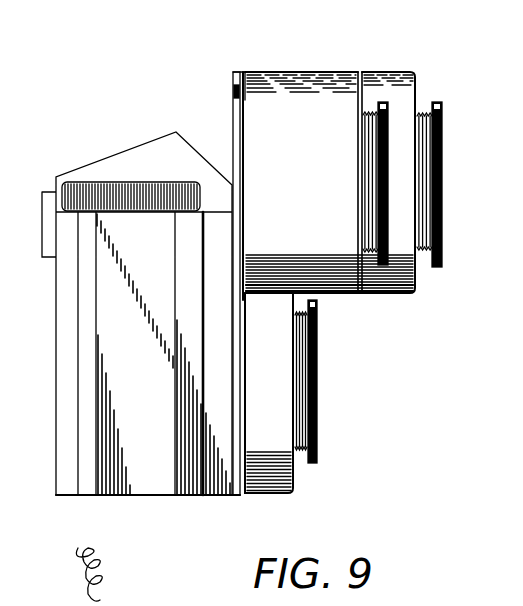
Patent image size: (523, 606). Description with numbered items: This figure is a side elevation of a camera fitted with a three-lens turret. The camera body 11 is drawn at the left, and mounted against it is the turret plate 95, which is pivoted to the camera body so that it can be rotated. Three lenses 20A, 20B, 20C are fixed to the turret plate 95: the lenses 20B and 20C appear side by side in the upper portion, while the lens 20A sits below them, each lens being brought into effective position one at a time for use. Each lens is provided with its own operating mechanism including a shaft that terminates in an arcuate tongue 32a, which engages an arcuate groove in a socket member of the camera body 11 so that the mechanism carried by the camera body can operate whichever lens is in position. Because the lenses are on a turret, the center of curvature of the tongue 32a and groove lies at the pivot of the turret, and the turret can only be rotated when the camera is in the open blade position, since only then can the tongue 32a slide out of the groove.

The camera body 11 is at (67, 358).
The arcuate tongue 32a is at (231, 90).
The turret plate 95 is at (242, 72).
The lens 20A is at (281, 393).
The lens 20B is at (328, 186).
The lens 20C is at (402, 102).